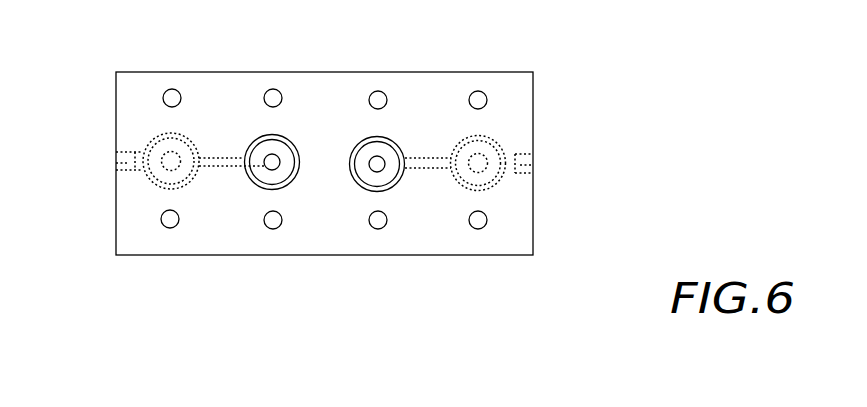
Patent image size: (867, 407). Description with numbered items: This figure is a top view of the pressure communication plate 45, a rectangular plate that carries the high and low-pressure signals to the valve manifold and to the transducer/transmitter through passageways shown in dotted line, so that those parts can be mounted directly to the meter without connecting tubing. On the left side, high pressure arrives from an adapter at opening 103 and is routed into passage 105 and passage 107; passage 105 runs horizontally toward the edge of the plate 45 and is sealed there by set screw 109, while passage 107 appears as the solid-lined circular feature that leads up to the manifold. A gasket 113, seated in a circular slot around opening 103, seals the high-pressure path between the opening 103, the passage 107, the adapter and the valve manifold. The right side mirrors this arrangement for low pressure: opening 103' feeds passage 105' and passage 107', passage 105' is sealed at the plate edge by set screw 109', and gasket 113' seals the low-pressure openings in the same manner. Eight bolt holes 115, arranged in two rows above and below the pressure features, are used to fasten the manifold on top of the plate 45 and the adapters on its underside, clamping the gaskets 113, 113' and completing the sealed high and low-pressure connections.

The pressure communication plate 45 is at (535, 118).
The opening 103 is at (109, 189).
The opening 103' is at (552, 183).
The passage 105 is at (231, 131).
The passage 105' is at (460, 98).
The passage 107 is at (283, 225).
The passage 107' is at (395, 108).
The set screw 109 is at (93, 154).
The set screw 109' is at (582, 167).
The gasket 113 is at (173, 225).
The gasket 113' is at (463, 234).
The bolt hole 115 is at (264, 97).